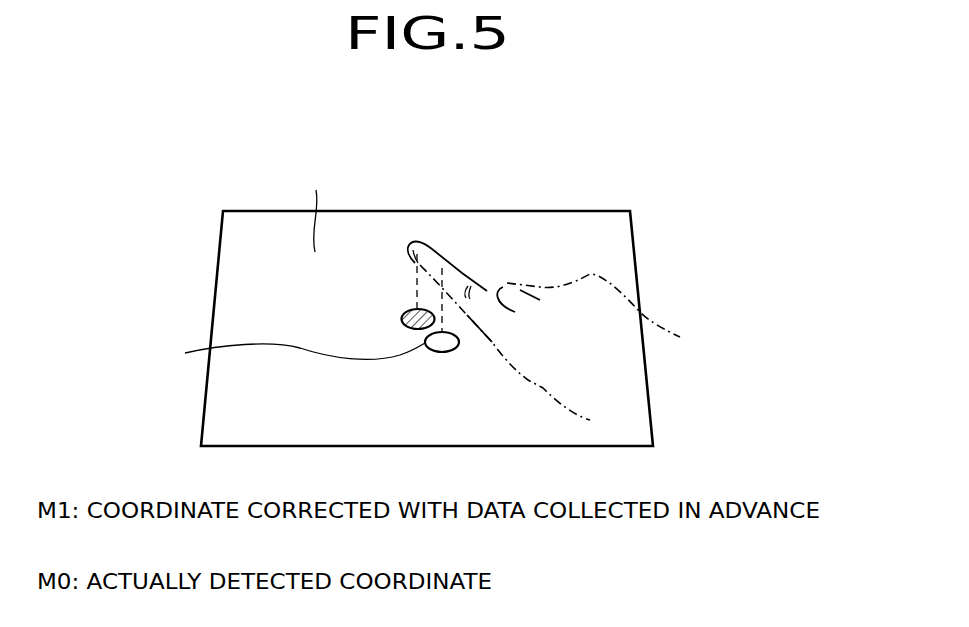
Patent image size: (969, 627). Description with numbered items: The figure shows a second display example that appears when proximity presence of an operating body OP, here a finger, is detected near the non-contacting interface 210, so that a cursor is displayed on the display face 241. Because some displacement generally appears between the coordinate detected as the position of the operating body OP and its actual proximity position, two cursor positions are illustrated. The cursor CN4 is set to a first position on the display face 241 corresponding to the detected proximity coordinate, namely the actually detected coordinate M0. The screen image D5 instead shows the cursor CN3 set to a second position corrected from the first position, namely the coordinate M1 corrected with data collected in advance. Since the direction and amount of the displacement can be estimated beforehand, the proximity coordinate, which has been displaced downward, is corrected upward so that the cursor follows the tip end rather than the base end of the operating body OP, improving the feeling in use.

The non-contacting interface 210 is at (554, 226).
The screen image D5 is at (317, 209).
The display face 241 is at (432, 226).
The operating body OP is at (462, 273).
The cursor CN3 is at (404, 312).
The coordinate corrected with data collected in advance M1 is at (396, 320).
The actually detected coordinate M0 is at (442, 326).
The cursor CN4 is at (282, 356).